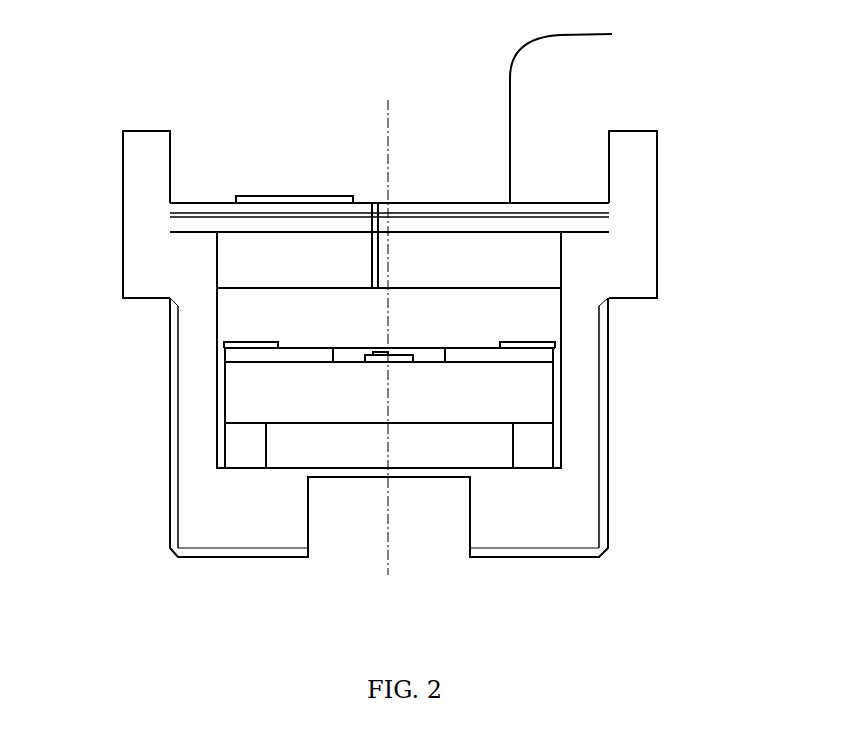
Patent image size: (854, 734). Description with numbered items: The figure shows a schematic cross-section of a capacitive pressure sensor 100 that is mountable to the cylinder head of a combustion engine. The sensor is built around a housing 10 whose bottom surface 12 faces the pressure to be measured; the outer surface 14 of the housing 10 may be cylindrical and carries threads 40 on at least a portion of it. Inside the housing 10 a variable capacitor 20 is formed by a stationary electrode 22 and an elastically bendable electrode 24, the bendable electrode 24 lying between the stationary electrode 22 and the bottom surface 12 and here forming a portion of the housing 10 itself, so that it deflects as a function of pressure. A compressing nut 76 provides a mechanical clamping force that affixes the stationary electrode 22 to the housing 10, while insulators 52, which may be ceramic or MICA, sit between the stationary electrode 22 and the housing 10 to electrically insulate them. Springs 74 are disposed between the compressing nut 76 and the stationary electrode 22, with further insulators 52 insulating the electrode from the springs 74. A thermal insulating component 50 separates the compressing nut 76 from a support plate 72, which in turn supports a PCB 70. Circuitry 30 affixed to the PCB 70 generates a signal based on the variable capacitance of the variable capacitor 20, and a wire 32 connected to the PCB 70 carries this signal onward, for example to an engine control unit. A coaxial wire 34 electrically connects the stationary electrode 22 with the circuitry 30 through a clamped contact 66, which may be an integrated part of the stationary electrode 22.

The capacitive pressure sensor 100 is at (306, 148).
The housing 10 is at (236, 518).
The bottom surface 12 is at (412, 481).
The outer surface 14 is at (657, 252).
The variable capacitor 20 is at (353, 454).
The stationary electrode 22 is at (353, 400).
The elastically bendable electrode 24 is at (368, 478).
The circuitry 30 is at (242, 199).
The wire 32 is at (510, 112).
The coaxial wire 34 is at (372, 250).
The threads 40 is at (179, 438).
The thermal insulating component 50 is at (448, 268).
The insulators 52 is at (228, 357).
The clamped contact 66 is at (377, 357).
The PCB 70 is at (600, 210).
The support plate 72 is at (587, 223).
The springs 74 is at (224, 345).
The compressing nut 76 is at (353, 330).